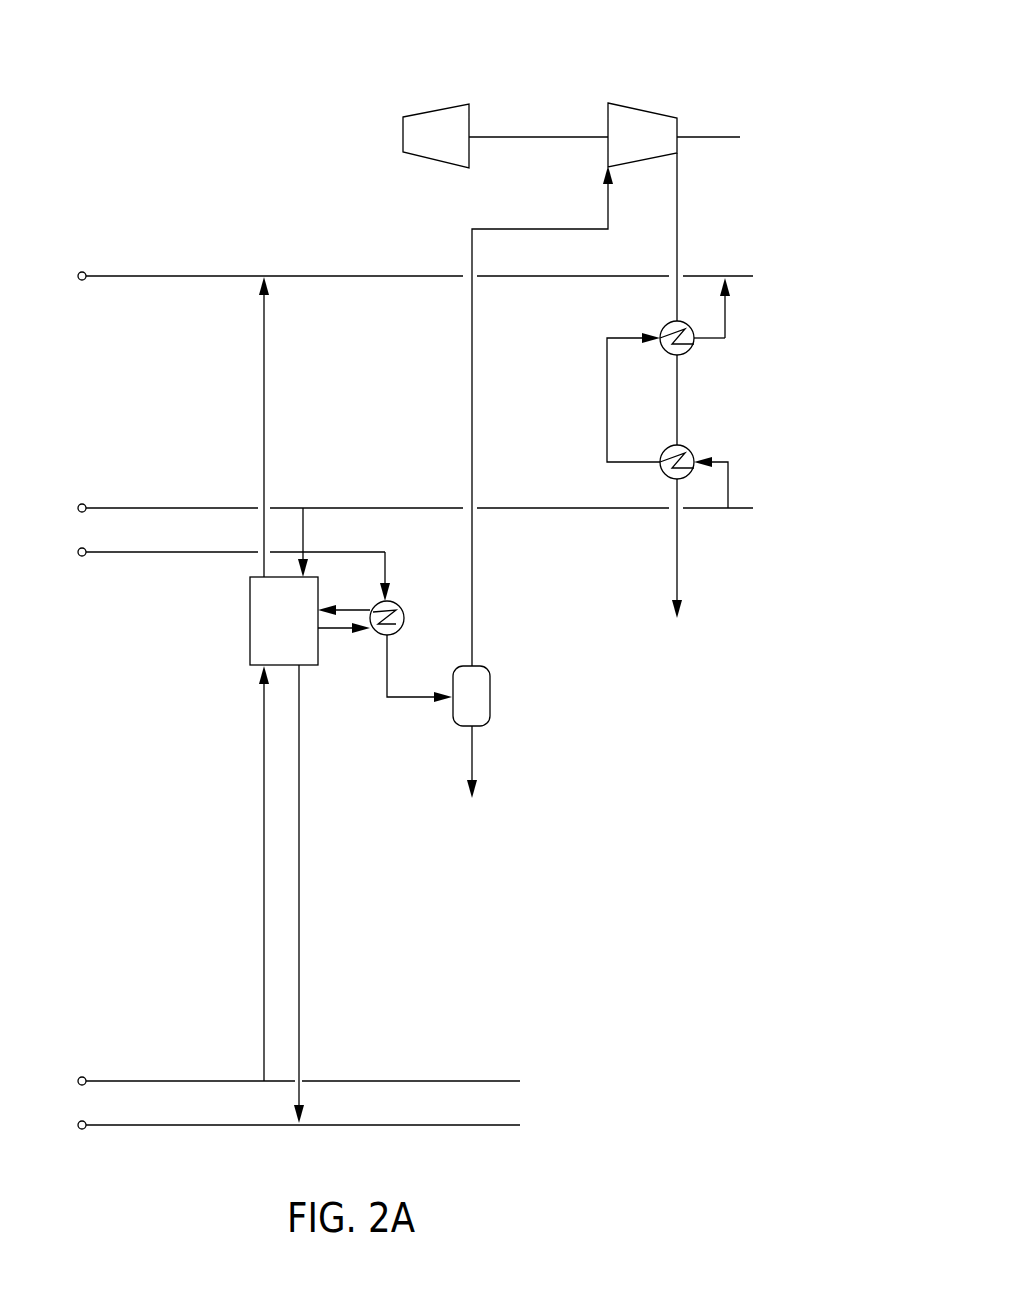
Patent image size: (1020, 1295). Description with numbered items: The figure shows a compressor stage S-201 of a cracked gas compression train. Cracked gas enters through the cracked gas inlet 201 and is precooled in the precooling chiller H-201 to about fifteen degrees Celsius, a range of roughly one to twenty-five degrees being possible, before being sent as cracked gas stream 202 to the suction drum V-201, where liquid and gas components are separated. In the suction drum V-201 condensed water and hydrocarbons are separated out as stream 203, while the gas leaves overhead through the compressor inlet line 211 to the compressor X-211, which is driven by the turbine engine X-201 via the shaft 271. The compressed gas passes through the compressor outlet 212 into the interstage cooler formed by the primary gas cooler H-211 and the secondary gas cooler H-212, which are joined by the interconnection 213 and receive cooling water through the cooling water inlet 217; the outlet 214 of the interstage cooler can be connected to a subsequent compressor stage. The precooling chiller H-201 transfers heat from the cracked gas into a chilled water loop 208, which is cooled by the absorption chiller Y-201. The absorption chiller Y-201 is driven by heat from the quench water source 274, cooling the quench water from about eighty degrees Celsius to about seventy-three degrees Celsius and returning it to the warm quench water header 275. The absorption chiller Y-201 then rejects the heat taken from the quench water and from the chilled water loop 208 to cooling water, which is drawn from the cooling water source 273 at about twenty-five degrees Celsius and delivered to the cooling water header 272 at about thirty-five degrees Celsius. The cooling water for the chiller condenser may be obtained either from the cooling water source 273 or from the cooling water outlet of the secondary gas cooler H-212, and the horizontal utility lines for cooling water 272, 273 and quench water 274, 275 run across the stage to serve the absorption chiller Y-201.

The compressor stage S-201 is at (160, 88).
The turbine engine X-201 is at (436, 156).
The shaft 271 is at (535, 135).
The expander X-211 is at (607, 147).
The expanded stream line 212 is at (678, 233).
The cooling water header 272 is at (155, 273).
The cooling water source 273 is at (118, 505).
The chilled water loop 208 is at (362, 606).
The primary gas cooler H-211 is at (706, 361).
The secondary gas cooler H-212 is at (706, 449).
The stream line 213 is at (603, 398).
The stream line 217 is at (729, 477).
The outlet 214 is at (673, 562).
The cracked gas inlet 201 is at (117, 555).
The absorption chiller Y-201 is at (250, 635).
The precooling chiller H-201 is at (382, 638).
The stream line 211 is at (473, 648).
The cracked gas inlet 202 is at (408, 702).
The suction drum V-201 is at (496, 714).
The separated liquid stream 203 is at (475, 772).
The quench water source 274 is at (150, 1078).
The quench water header 275 is at (127, 1128).